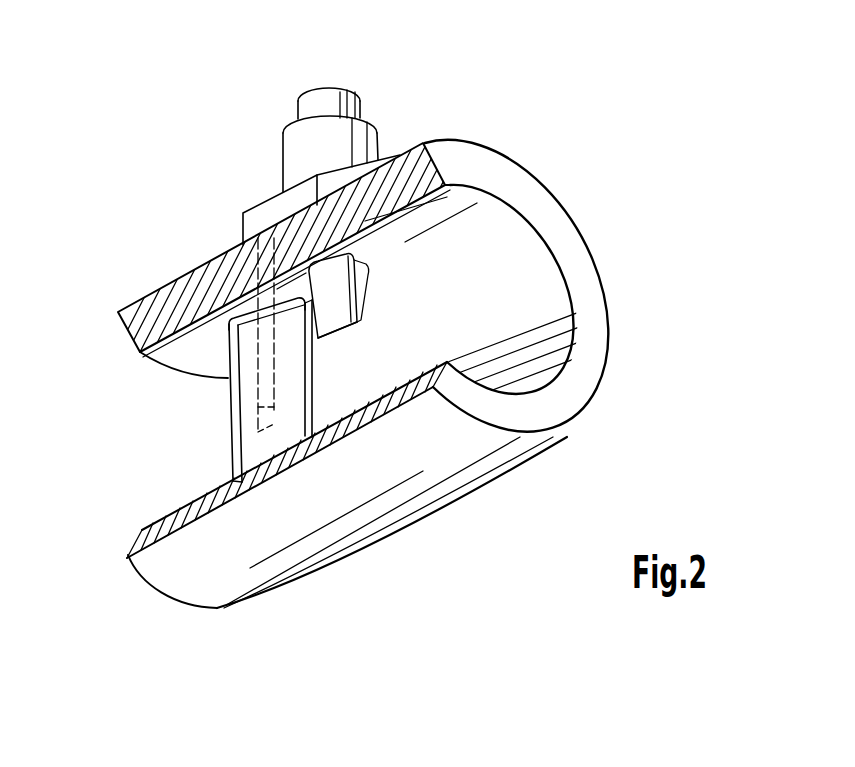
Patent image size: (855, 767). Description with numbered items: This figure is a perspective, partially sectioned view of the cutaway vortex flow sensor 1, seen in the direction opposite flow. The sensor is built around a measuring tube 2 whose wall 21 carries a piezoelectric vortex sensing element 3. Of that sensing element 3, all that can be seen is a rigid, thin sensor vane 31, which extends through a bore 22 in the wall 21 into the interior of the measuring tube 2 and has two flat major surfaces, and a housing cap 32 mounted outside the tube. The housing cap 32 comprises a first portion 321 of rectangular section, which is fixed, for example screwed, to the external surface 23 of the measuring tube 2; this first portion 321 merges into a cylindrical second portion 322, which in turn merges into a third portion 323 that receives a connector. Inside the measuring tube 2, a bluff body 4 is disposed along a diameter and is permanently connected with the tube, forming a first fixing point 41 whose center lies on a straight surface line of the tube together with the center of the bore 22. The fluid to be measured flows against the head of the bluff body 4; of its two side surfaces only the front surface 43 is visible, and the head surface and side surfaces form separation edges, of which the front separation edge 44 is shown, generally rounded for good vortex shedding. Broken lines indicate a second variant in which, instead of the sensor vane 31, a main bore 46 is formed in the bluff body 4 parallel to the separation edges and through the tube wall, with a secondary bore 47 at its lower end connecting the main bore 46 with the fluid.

The vortex flow sensor 1 is at (580, 90).
The measuring tube 2 is at (185, 572).
The wall 21 is at (478, 152).
The bore 22 is at (367, 278).
The external surface 23 is at (417, 140).
The vortex sensing element 3 is at (264, 122).
The sensor vane 31 is at (347, 327).
The housing cap 32 is at (240, 223).
The first portion 321 is at (270, 207).
The second portion 322 is at (297, 150).
The third portion 323 is at (343, 88).
The bluff body 4 is at (230, 403).
The first fixing point 41 is at (243, 292).
The front surface 43 is at (300, 392).
The front separation edge 44 is at (237, 453).
The main bore 46 is at (268, 357).
The secondary bore 47 is at (258, 418).